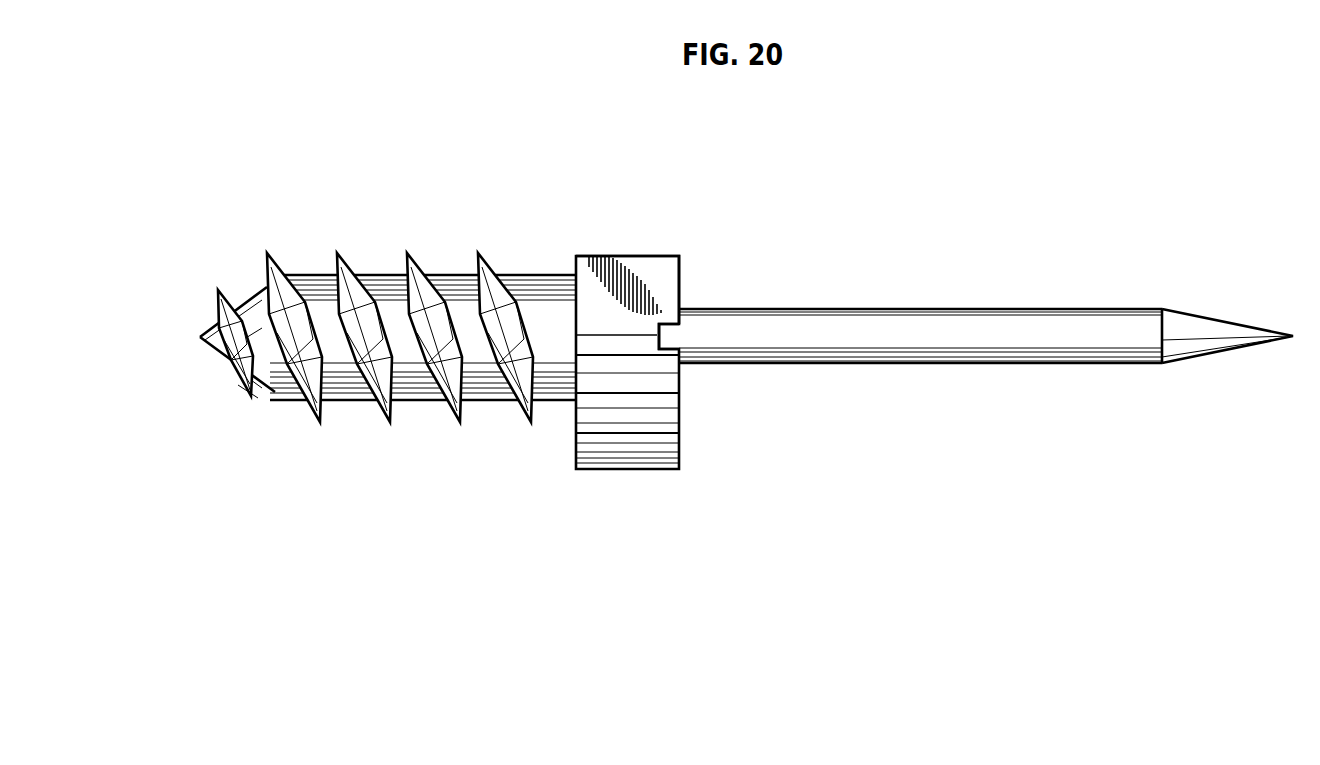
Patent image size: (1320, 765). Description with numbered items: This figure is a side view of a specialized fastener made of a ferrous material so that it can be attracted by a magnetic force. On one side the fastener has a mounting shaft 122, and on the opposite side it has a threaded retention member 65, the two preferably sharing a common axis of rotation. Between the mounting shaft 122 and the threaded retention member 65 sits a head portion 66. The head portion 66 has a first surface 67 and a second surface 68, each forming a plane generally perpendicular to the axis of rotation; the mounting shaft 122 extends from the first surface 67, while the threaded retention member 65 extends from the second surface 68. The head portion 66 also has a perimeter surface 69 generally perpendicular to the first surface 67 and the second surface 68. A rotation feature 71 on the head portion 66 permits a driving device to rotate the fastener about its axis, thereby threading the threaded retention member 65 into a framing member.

The threaded retention member 65 is at (280, 382).
The head portion 66 is at (679, 428).
The first surface 67 is at (580, 441).
The second surface 68 is at (680, 287).
The perimeter surface 69 is at (663, 280).
The rotation feature 71 is at (677, 333).
The mounting shaft 122 is at (1140, 314).